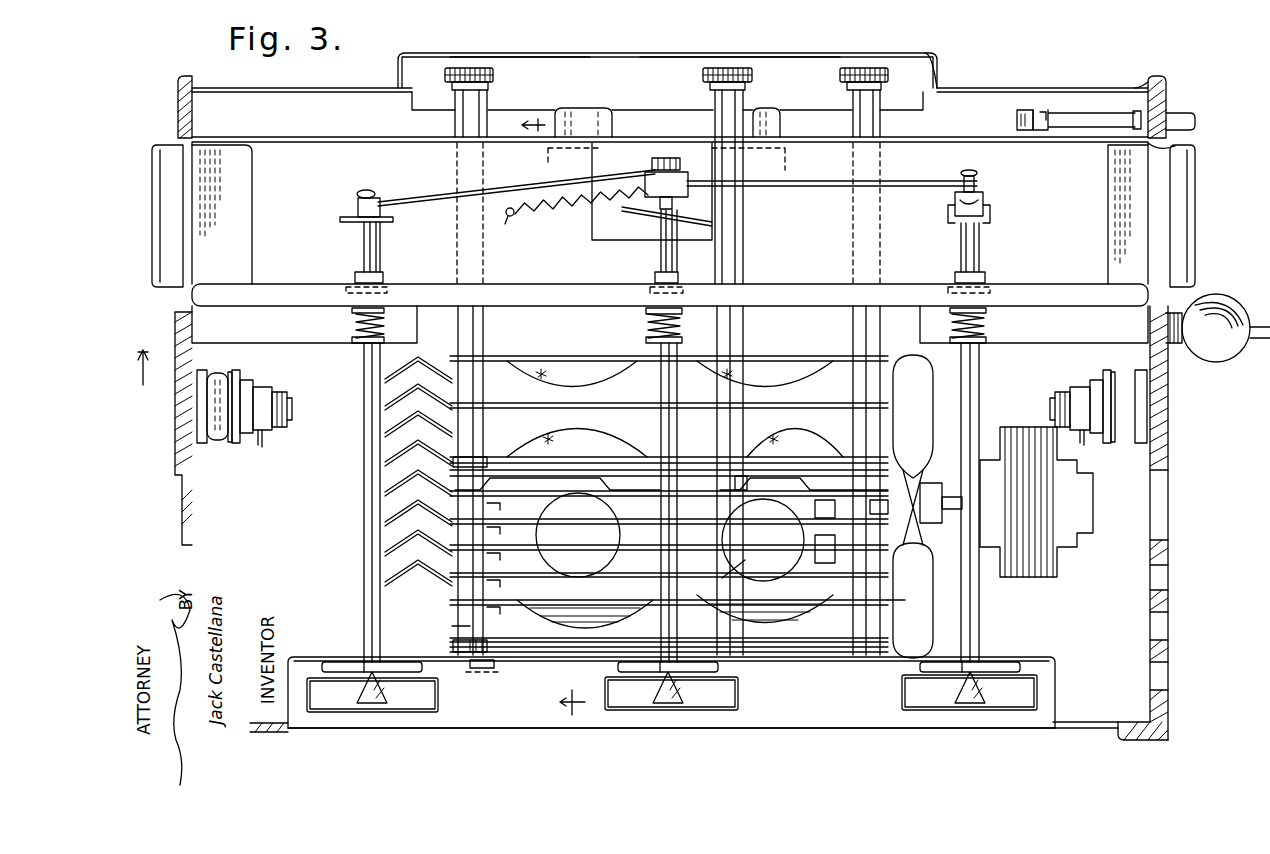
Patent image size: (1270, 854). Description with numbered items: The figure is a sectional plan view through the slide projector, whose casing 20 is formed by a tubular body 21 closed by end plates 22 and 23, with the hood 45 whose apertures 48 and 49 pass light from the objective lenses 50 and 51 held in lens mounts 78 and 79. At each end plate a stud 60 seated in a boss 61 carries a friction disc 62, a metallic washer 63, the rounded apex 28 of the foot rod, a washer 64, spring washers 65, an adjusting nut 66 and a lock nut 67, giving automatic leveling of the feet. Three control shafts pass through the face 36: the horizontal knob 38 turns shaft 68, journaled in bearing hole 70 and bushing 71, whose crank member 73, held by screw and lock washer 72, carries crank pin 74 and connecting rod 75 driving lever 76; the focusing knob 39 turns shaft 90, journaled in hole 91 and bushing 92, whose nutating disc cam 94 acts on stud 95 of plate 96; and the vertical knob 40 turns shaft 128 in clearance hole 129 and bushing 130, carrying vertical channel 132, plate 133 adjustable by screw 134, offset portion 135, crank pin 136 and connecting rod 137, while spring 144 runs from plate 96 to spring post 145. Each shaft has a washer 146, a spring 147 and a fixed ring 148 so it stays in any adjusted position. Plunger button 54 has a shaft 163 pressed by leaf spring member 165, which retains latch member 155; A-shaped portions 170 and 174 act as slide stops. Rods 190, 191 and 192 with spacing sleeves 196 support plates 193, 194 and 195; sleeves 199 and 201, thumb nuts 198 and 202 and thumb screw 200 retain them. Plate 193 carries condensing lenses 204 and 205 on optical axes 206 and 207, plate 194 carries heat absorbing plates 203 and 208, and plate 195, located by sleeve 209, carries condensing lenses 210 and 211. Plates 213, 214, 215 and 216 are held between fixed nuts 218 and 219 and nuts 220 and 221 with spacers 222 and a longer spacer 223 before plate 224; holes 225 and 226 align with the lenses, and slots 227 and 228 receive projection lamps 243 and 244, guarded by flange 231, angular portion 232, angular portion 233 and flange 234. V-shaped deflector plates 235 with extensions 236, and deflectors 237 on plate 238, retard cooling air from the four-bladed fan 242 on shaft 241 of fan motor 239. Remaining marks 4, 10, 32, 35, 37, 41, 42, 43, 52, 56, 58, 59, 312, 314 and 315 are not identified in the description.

The section line 4 is at (142, 376).
The section line 10 is at (541, 415).
The casing 20 is at (988, 91).
The tubular body 21 is at (332, 90).
The end plate 22 is at (180, 412).
The end plate 23 is at (1168, 440).
The rounded apex 28 is at (218, 440).
The wall section 32 is at (1164, 565).
The base 35 is at (790, 738).
The face 36 is at (512, 665).
The base plate 37 is at (480, 729).
The knob 38 is at (368, 702).
The knob 39 is at (667, 702).
The knob 40 is at (964, 702).
The horizontal label plate 41 is at (412, 712).
The focus label plate 42 is at (716, 710).
The vertical label plate 43 is at (1006, 710).
The hood 45 is at (912, 53).
The aperture 48 is at (512, 55).
The aperture 49 is at (818, 55).
The objective lens 50 is at (585, 108).
The objective lens 51 is at (764, 110).
The slot 52 is at (1178, 148).
The plunger button 54 is at (1185, 114).
The knob 56 is at (1210, 294).
The shaft 58 is at (1255, 326).
The end block 59 is at (162, 146).
The stud 60 is at (292, 408).
The boss 61 is at (201, 370).
The friction disc 62 is at (232, 372).
The metallic washer 63 is at (234, 370).
The washer 64 is at (246, 380).
The spring washers 65 is at (259, 446).
The adjusting nut 66 is at (265, 388).
The lock nut 67 is at (282, 424).
The shaft 68 is at (380, 240).
The bearing hole 70 is at (362, 662).
The bushing 71 is at (382, 278).
The screw and lock washer 72 is at (358, 204).
The crank member 73 is at (340, 217).
The crank pin 74 is at (366, 190).
The connecting rod 75 is at (435, 198).
The lever 76 is at (652, 160).
The lens mount 78 is at (546, 162).
The lens mount 79 is at (785, 165).
The shaft 90 is at (661, 254).
The hole 91 is at (680, 662).
The bushing 92 is at (655, 278).
The nutating disc cam 94 is at (626, 212).
The stud 95 is at (673, 204).
The plate 96 is at (690, 172).
The shaft 128 is at (961, 250).
The clearance hole 129 is at (980, 662).
The bushing 130 is at (985, 276).
The vertical channel 132 is at (990, 215).
The plate 133 is at (950, 218).
The screw 134 is at (955, 200).
The offset portion 135 is at (983, 196).
The crank pin 136 is at (968, 170).
The connecting rod 137 is at (888, 180).
The spring 144 is at (550, 204).
The spring post 145 is at (510, 218).
The washer 146 is at (352, 318).
The spring 147 is at (356, 328).
The fixed ring 148 is at (356, 343).
The latch member 155 is at (1050, 106).
The shaft 163 is at (1072, 122).
The leaf spring member 165 is at (1016, 112).
The A-shaped portion 170 is at (1190, 224).
The A-shaped portion 174 is at (165, 290).
The rod 190 is at (472, 358).
The rod 191 is at (806, 358).
The rod 192 is at (760, 357).
The plate 193 is at (506, 360).
The plate 194 is at (493, 404).
The plate 195 is at (494, 457).
The spacing sleeve 196 is at (470, 345).
The thumb nut 198 is at (446, 74).
The elongated sleeve 199 is at (715, 98).
The thumb screw 200 is at (704, 74).
The elongated sleeve 201 is at (876, 120).
The thumb nut 202 is at (888, 75).
The heat absorbing plate 203 is at (598, 406).
The condensing lens 204 is at (568, 370).
The condensing lens 205 is at (766, 360).
The optical axis 206 is at (578, 420).
The optical axis 207 is at (770, 420).
The heat absorbing plate 208 is at (790, 406).
The sleeve 209 is at (730, 480).
The condensing lens 210 is at (616, 448).
The condensing lens 211 is at (806, 448).
The plate 213 is at (490, 529).
The plate 214 is at (490, 556).
The plate 215 is at (490, 583).
The plate 216 is at (490, 609).
The fixed nut 218 is at (452, 465).
The fixed nut 219 is at (452, 652).
The nut 220 is at (905, 468).
The nut 221 is at (895, 655).
The spacer 222 is at (452, 492).
The spacer 223 is at (470, 630).
The plate 224 is at (496, 648).
The hole 225 is at (508, 490).
The hole 226 is at (800, 490).
The slot 227 is at (616, 548).
The slot 228 is at (722, 550).
The flange portion 231 is at (818, 586).
The angular portion 232 is at (820, 556).
The angular portion 233 is at (815, 510).
The flange portion 234 is at (818, 538).
The deflector plate 235 is at (410, 592).
The extension 236 is at (470, 612).
The deflector plate 237 is at (398, 374).
The plate 238 is at (310, 276).
The fan motor 239 is at (1050, 552).
The shaft 241 is at (945, 496).
The four-bladed fan 242 is at (907, 362).
The projection lamp 243 is at (592, 492).
The projection lamp 244 is at (725, 575).
The clamp 312 is at (490, 506).
The lens 314 is at (606, 625).
The lens 315 is at (790, 625).